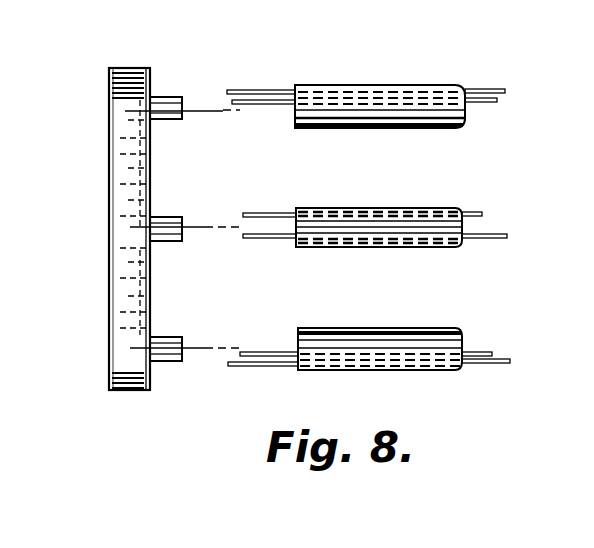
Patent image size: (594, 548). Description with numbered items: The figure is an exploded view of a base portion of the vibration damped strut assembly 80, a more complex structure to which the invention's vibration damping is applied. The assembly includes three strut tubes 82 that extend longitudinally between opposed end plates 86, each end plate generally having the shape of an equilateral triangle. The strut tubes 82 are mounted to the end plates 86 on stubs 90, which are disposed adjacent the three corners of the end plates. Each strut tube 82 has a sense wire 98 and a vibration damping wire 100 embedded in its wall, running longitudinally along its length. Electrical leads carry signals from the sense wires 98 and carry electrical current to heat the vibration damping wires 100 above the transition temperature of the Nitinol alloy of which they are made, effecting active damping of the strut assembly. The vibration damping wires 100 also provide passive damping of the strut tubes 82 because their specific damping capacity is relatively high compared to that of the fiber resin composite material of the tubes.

The vibration damped strut assembly 80 is at (242, 392).
The strut tube 82 is at (383, 108).
The end plate 86 is at (112, 349).
The stub 90 is at (167, 114).
The sense wire 98 is at (256, 88).
The vibration damping wire 100 is at (268, 105).